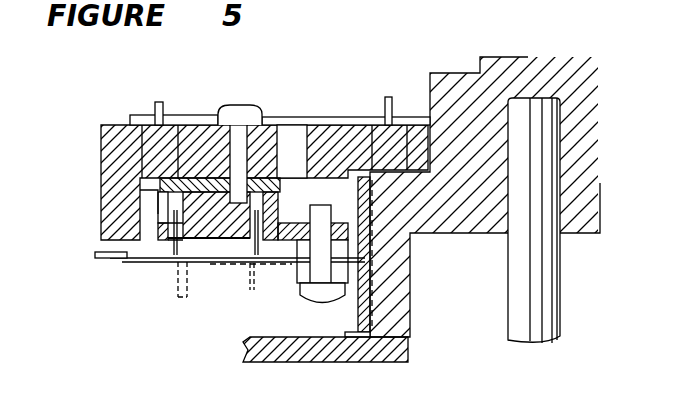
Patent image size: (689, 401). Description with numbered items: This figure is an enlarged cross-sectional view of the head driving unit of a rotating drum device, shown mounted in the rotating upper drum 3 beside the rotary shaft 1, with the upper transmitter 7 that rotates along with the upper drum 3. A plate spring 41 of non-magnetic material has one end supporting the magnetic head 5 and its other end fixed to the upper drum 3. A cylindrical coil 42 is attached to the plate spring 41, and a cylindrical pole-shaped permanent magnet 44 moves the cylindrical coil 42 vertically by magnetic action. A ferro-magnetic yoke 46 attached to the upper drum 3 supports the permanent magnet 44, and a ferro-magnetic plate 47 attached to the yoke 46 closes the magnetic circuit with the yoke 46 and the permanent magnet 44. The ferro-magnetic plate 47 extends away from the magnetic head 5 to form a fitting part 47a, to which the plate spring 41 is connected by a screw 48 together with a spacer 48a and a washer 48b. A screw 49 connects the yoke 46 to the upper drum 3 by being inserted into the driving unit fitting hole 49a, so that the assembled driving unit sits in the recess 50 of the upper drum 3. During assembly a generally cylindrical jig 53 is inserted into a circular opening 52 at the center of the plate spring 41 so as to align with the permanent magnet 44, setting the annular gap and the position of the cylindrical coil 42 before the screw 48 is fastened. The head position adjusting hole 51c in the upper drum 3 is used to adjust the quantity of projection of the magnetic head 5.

The rotary shaft 1 is at (542, 282).
The rotating upper drum 3 is at (116, 124).
The magnetic head 5 is at (102, 252).
The upper transmitter 7 is at (393, 348).
The plate spring 41 is at (117, 262).
The cylindrical coil 42 is at (190, 264).
The permanent magnet 44 is at (256, 245).
The yoke 46 is at (157, 224).
The ferro-magnetic plate 47 is at (162, 238).
The fitting part 47a is at (281, 243).
The screw 48 is at (360, 306).
The spacer 48a is at (338, 248).
The washer 48b is at (340, 272).
The screw 49 is at (244, 112).
The driving unit fitting hole 49a is at (222, 135).
The recess 50 is at (146, 190).
The head position adjusting hole 51c is at (305, 132).
The circular opening 52 is at (206, 192).
The jig 53 is at (180, 285).